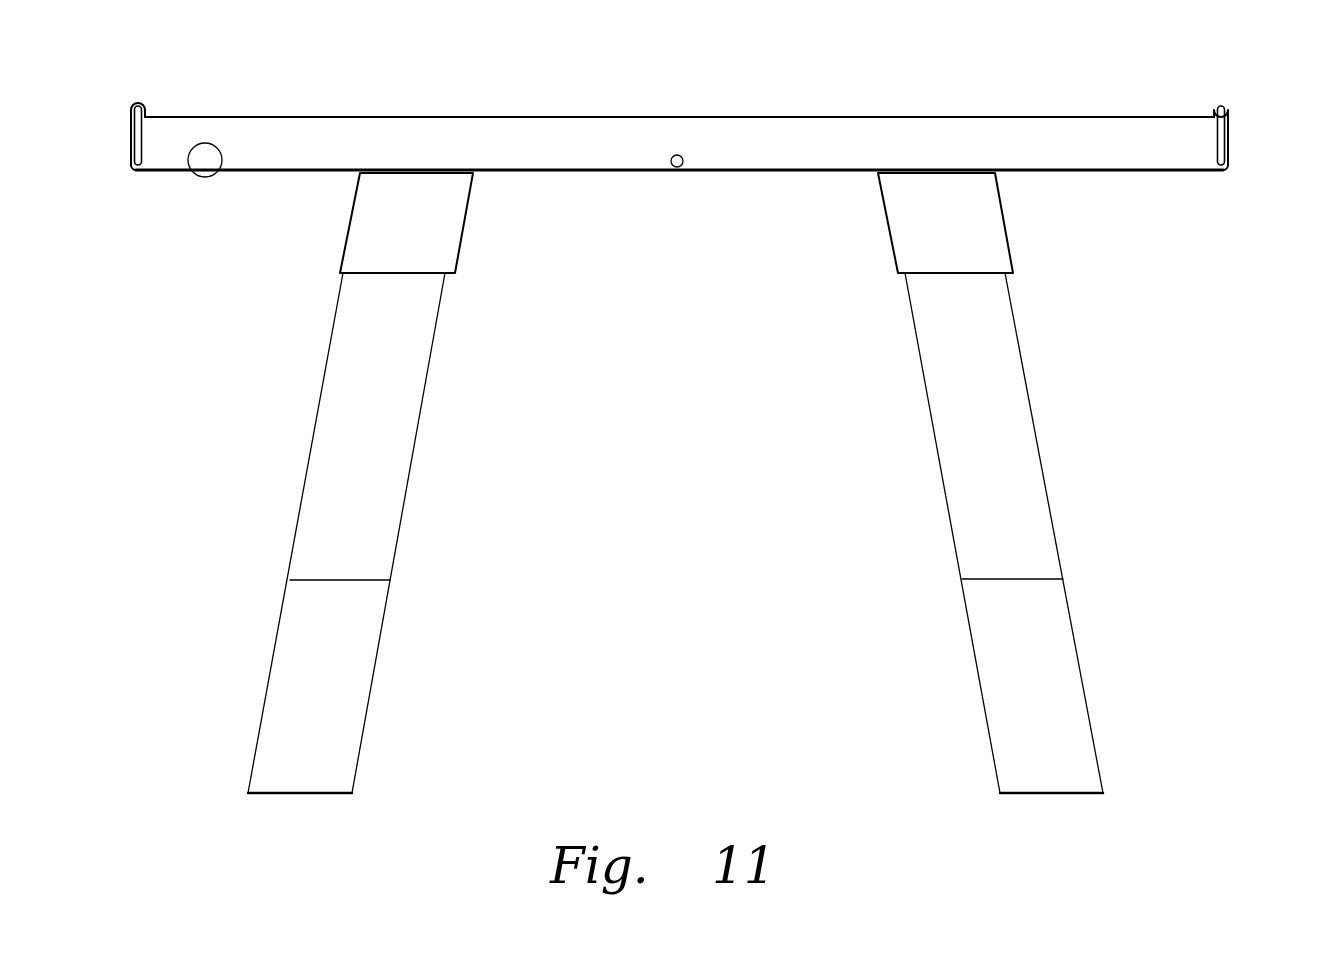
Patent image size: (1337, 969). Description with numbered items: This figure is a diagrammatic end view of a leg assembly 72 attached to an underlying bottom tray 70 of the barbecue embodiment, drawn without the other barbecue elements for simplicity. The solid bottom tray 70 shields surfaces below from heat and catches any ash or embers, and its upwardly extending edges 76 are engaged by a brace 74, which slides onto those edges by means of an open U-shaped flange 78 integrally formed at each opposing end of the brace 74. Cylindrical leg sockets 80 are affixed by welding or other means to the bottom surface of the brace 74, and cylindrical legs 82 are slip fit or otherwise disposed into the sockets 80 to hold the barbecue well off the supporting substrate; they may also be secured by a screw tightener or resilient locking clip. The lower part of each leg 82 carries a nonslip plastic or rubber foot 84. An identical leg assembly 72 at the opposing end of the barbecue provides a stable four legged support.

The bottom tray 70 is at (221, 175).
The leg assembly 72 is at (882, 367).
The brace 74 is at (760, 175).
The upwardly extending edges 76 is at (145, 107).
The open U-shaped flange 78 is at (130, 135).
The cylindrical leg socket 80 is at (462, 238).
The cylindrical leg 82 is at (947, 500).
The nonslip foot 84 is at (375, 668).